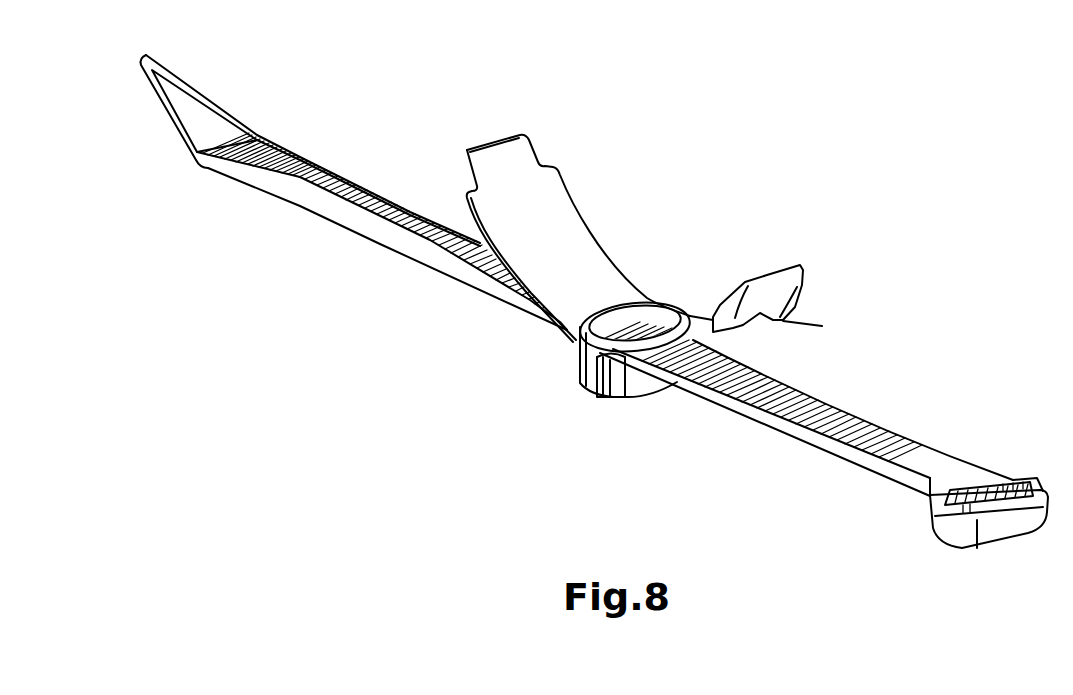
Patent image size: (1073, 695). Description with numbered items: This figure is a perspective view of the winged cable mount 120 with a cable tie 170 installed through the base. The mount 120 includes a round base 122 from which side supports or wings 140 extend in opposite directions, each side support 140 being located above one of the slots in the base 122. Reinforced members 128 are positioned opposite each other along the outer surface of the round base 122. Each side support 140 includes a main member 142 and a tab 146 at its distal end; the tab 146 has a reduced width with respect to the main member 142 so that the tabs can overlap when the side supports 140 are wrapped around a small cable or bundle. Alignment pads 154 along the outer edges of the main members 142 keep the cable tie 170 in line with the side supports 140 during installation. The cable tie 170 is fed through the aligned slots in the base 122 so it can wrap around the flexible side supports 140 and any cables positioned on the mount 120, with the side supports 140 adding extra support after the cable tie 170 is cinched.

The winged cable mount 120 is at (462, 338).
The round base 122 is at (645, 382).
The reinforced members 128 is at (577, 357).
The side supports 140 is at (587, 228).
The main member 142 is at (545, 205).
The tab 146 is at (500, 157).
The alignment pads 154 is at (797, 313).
The cable tie 170 is at (852, 415).